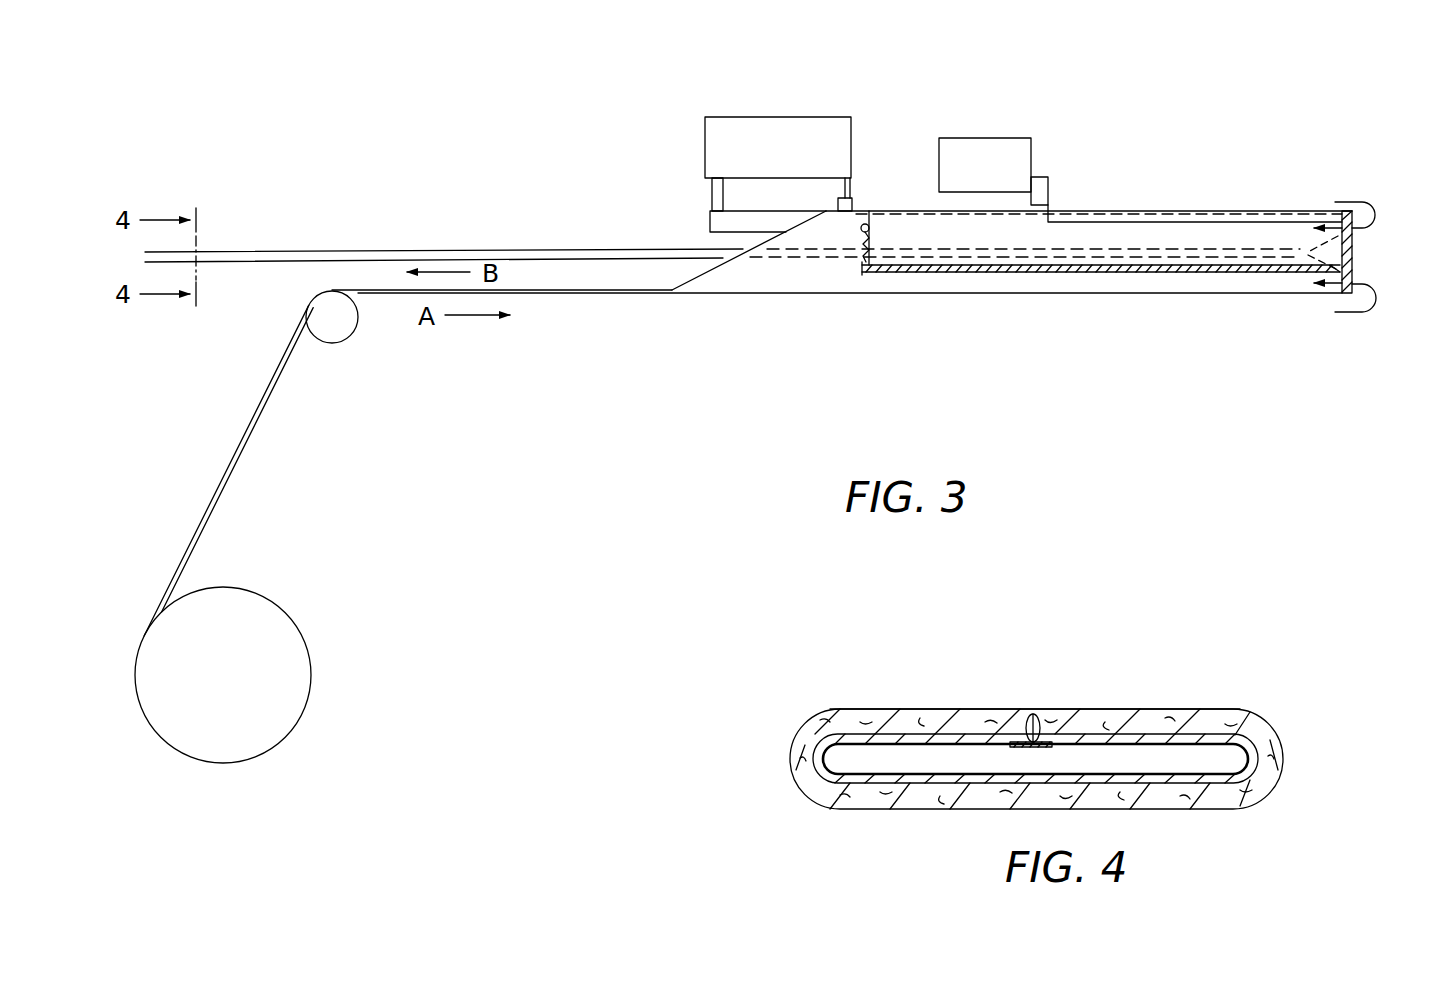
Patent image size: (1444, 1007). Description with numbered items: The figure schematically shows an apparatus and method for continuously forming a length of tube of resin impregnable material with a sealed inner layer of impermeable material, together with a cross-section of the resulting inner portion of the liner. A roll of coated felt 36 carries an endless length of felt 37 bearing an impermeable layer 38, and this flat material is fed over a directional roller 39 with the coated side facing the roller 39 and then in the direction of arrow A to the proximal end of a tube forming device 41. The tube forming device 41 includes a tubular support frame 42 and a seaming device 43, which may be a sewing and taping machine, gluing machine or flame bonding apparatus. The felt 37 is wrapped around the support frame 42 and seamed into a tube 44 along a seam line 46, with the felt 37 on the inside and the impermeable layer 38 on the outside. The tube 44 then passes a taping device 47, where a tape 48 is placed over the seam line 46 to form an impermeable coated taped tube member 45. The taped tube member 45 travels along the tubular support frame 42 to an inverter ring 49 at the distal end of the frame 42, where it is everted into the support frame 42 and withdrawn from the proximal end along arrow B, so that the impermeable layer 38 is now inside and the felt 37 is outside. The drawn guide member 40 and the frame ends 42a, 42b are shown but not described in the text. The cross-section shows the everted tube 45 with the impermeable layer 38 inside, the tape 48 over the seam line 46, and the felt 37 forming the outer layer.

In FIG. 3, the roll of coated felt 36 is at (303, 657).
In FIG. 3, the felt 37 is at (212, 498).
In FIG. 4, the felt 37 is at (1256, 744).
In FIG. 3, the impermeable layer 38 is at (251, 444).
In FIG. 4, the impermeable layer 38 is at (1140, 746).
In FIG. 3, the directional roller 39 is at (345, 332).
In FIG. 3, the guide member 40 is at (705, 275).
In FIG. 3, the tube forming device 41 is at (1072, 148).
In FIG. 3, the tubular support frame 42 is at (918, 272).
In FIG. 3, the heater strip first end 42a is at (860, 263).
In FIG. 3, the heater strip second end 42b is at (1340, 267).
In FIG. 3, the seaming device 43 is at (725, 117).
In FIG. 3, the tube 44 is at (572, 254).
In FIG. 3, the impermeable coated taped tube member 45 is at (250, 247).
In FIG. 4, the impermeable coated taped tube member 45 is at (950, 709).
In FIG. 3, the seam line 46 is at (869, 212).
In FIG. 4, the seam line 46 is at (1010, 712).
In FIG. 3, the taping device 47 is at (1000, 138).
In FIG. 3, the tape 48 is at (1245, 211).
In FIG. 4, the tape 48 is at (1052, 752).
In FIG. 3, the inverter ring 49 is at (1352, 250).